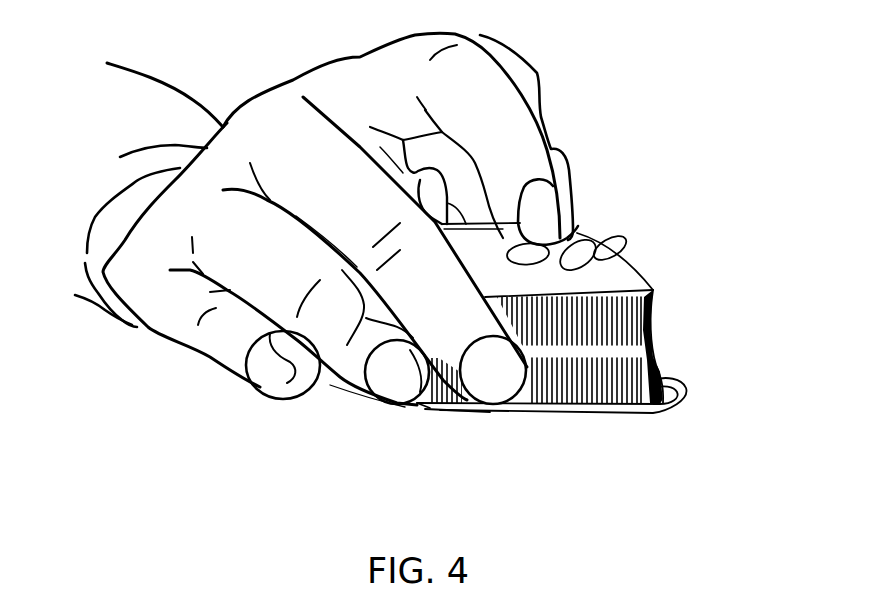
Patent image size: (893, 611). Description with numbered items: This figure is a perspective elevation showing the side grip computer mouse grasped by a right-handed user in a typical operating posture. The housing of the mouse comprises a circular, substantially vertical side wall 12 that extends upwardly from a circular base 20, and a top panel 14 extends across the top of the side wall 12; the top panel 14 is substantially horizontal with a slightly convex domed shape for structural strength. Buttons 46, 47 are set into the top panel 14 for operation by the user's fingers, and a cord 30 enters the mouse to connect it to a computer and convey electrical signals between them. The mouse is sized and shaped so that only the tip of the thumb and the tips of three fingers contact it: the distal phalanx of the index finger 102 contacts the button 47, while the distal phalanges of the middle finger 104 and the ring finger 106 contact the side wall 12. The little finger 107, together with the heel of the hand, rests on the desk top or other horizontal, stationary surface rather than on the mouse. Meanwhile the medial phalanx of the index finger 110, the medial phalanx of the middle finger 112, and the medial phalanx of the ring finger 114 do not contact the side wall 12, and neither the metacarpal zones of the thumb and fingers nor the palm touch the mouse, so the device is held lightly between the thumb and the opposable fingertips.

The side wall 12 is at (653, 343).
The top panel 14 is at (590, 232).
The base 20 is at (687, 393).
The cord 30 is at (449, 188).
The button 46 is at (627, 264).
The button 47 is at (617, 242).
The index finger 102 is at (571, 180).
The middle finger 104 is at (423, 403).
The ring finger 106 is at (417, 402).
The little finger 107 is at (180, 340).
The medial phalanx of the index finger 110 is at (540, 73).
The medial phalanx of the middle finger 112 is at (347, 345).
The medial phalanx of the ring finger 114 is at (265, 394).